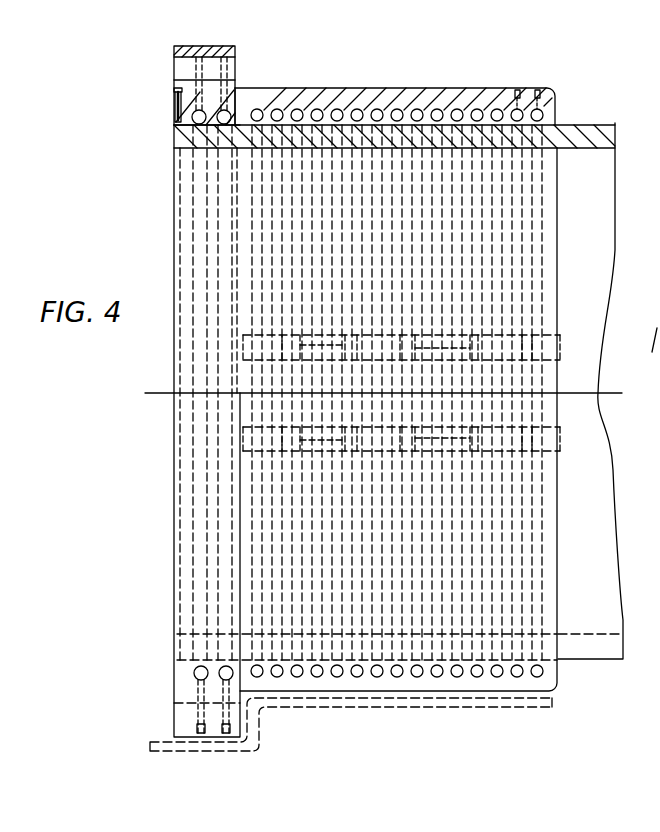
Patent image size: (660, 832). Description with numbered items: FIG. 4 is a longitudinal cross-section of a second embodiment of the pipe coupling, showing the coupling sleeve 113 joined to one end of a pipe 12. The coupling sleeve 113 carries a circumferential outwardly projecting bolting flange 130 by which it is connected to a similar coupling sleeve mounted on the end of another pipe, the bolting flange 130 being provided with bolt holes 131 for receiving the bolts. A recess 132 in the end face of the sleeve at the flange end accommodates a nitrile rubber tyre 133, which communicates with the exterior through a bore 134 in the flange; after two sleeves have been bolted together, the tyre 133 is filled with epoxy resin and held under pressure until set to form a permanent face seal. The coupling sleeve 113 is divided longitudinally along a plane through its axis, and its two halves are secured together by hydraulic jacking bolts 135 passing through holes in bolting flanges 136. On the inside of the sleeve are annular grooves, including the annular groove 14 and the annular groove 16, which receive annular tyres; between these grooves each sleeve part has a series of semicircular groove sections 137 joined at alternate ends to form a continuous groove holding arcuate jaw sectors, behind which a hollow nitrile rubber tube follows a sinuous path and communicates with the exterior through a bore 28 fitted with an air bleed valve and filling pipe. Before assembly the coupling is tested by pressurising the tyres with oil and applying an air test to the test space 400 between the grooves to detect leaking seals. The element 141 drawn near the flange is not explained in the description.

The vessel wall 12 is at (598, 256).
The tube sheet 14 is at (207, 147).
The bolt 16 is at (541, 115).
The drain conduit 28 is at (265, 704).
The insulating layer 113 is at (439, 94).
The header box 130 is at (176, 51).
The header tube 131 is at (226, 90).
The fitting 132 is at (172, 90).
The rod 133 is at (172, 113).
The seal 134 is at (236, 89).
The upper baffle 135 is at (556, 343).
The lower baffle 136 is at (505, 388).
The heat exchange tube 137 is at (356, 106).
The cover plate 141 is at (237, 52).
The tube plate 400 is at (205, 122).